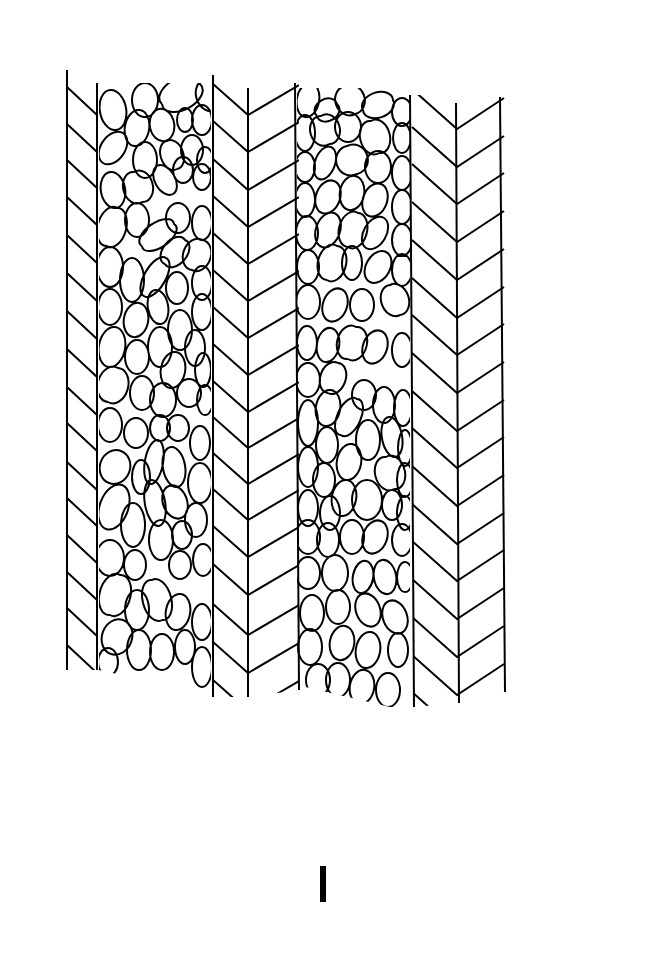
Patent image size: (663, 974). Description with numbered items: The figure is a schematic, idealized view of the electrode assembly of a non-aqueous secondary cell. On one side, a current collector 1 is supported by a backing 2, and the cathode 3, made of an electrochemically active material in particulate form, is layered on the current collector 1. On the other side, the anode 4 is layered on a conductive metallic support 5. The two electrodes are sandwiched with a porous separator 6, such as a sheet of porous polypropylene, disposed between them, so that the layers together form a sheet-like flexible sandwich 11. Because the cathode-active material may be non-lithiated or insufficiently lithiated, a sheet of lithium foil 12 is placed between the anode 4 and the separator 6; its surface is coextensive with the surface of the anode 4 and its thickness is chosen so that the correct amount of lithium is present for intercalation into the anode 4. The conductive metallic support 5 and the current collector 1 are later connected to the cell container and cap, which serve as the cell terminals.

The current collector 1 is at (427, 103).
The backing 2 is at (490, 163).
The cathode 3 is at (355, 102).
The anode 4 is at (147, 98).
The conductive metallic support 5 is at (83, 83).
The porous separator 6 is at (283, 102).
The sheet-like flexible sandwich 11 is at (508, 727).
The sheet of lithium foil 12 is at (228, 90).